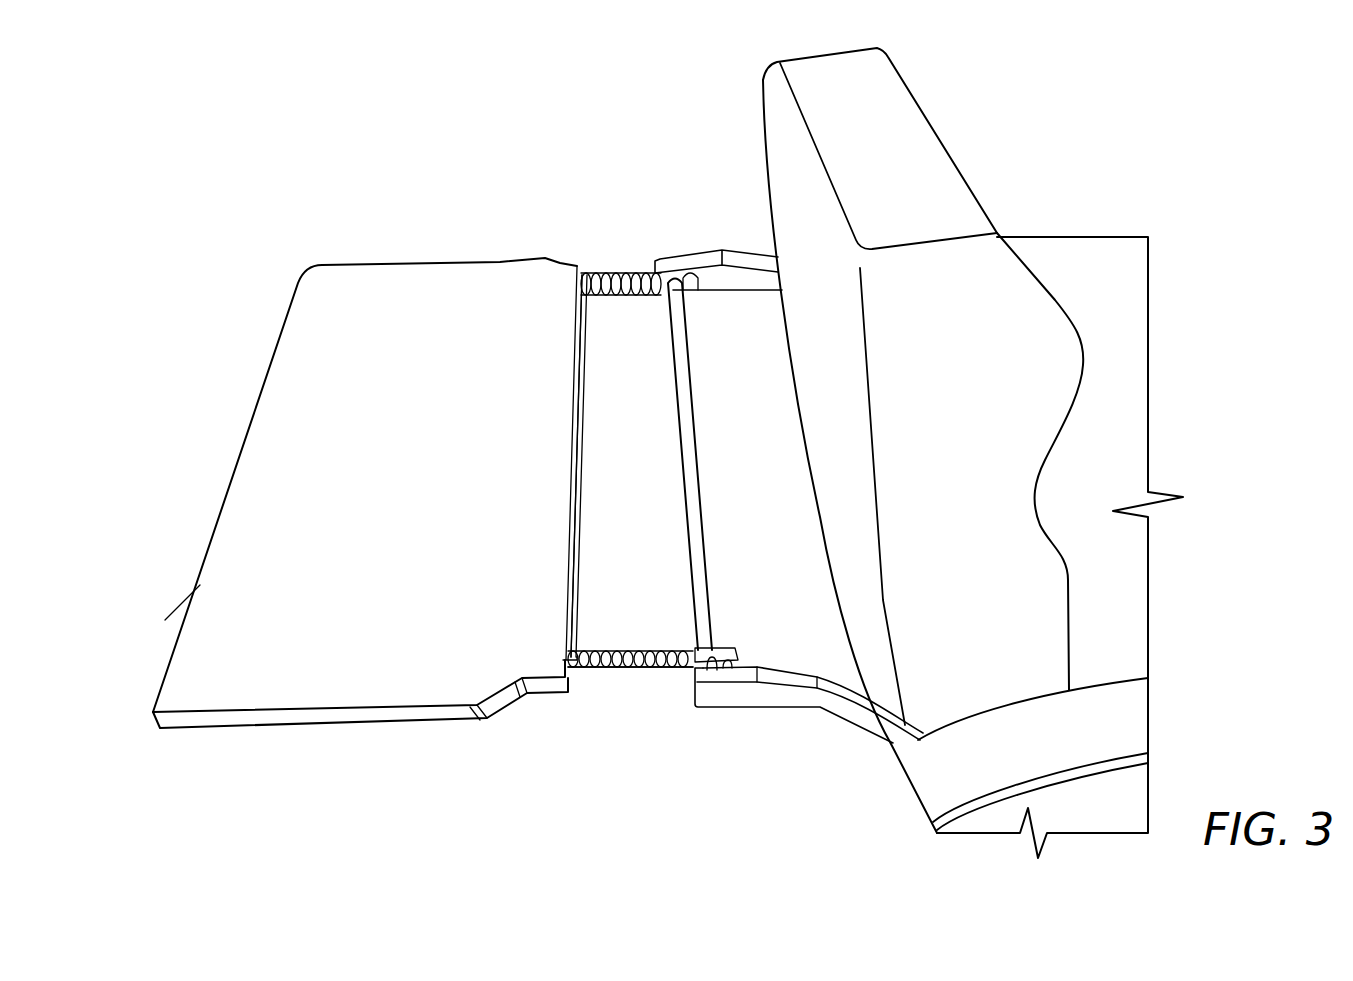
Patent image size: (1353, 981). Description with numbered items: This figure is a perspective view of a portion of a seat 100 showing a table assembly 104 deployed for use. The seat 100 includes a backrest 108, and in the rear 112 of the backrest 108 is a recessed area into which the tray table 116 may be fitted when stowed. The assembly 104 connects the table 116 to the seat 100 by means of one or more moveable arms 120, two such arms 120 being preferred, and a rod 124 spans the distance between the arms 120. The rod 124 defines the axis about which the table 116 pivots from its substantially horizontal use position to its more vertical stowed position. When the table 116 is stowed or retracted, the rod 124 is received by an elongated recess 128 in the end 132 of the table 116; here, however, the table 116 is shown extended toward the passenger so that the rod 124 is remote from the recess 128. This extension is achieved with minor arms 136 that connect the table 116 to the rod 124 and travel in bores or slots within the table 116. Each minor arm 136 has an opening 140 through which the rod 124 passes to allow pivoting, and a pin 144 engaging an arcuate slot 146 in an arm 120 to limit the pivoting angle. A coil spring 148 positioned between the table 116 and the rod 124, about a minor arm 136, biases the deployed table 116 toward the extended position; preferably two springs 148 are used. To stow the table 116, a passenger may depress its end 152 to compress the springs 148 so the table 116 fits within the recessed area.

The seat 100 is at (1257, 238).
The table assembly 104 is at (605, 534).
The backrest 108 is at (1020, 265).
The rear 112 is at (870, 600).
The tray table 116 is at (240, 692).
The moveable arm 120 is at (730, 707).
The rod 124 is at (695, 477).
The elongated recess 128 is at (580, 512).
The end 132 is at (570, 467).
The minor arm 136 is at (625, 670).
The opening 140 is at (703, 665).
The pin 144 is at (730, 650).
The arcuate slot 146 is at (693, 292).
The coil spring 148 is at (630, 295).
The end 152 is at (187, 608).